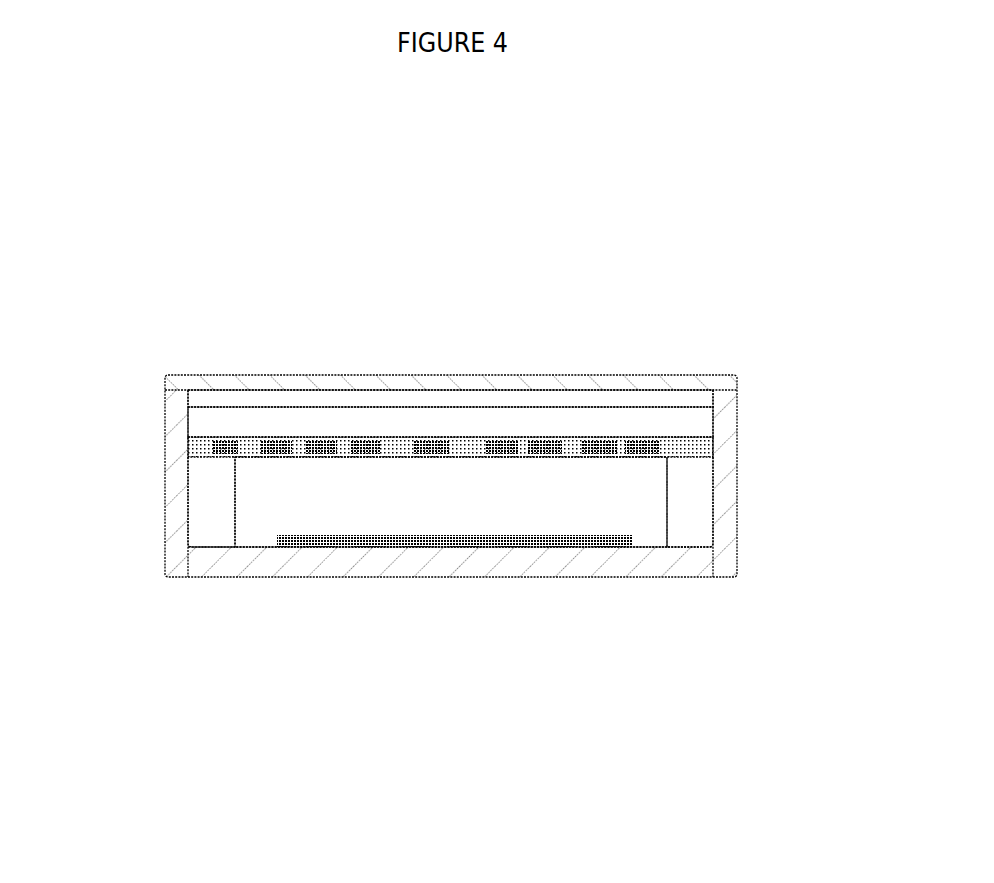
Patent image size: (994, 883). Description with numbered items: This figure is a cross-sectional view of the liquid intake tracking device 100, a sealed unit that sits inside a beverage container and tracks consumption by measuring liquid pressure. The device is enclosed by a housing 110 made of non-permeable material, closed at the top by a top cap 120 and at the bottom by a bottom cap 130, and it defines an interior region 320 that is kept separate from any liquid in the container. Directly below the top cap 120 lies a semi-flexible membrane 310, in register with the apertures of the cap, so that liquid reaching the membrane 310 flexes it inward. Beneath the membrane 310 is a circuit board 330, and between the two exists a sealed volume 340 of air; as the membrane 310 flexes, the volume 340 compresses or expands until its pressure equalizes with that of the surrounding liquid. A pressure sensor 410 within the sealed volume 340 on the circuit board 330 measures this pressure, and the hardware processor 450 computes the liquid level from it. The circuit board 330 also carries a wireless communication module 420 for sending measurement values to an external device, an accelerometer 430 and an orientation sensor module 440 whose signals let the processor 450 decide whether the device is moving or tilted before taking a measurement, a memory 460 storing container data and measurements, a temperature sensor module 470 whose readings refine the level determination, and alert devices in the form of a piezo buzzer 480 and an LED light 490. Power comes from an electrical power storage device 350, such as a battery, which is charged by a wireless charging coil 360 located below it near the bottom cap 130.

The liquid intake tracking device 100 is at (436, 559).
The housing 110 is at (725, 533).
The top cap 120 is at (663, 384).
The bottom cap 130 is at (660, 560).
The semi-flexible membrane 310 is at (232, 399).
The interior region 320 is at (208, 529).
The circuit board 330 is at (200, 446).
The sealed volume 340 is at (607, 426).
The electrical power storage device 350 is at (243, 518).
The wireless charging coil 360 is at (392, 540).
The pressure sensor 410 is at (223, 446).
The wireless communication module 420 is at (277, 446).
The accelerometer 430 is at (322, 446).
The orientation sensor module 440 is at (362, 446).
The hardware processor 450 is at (429, 446).
The memory 460 is at (503, 446).
The temperature sensor module 470 is at (542, 446).
The piezo buzzer 480 is at (599, 446).
The LED light 490 is at (638, 446).